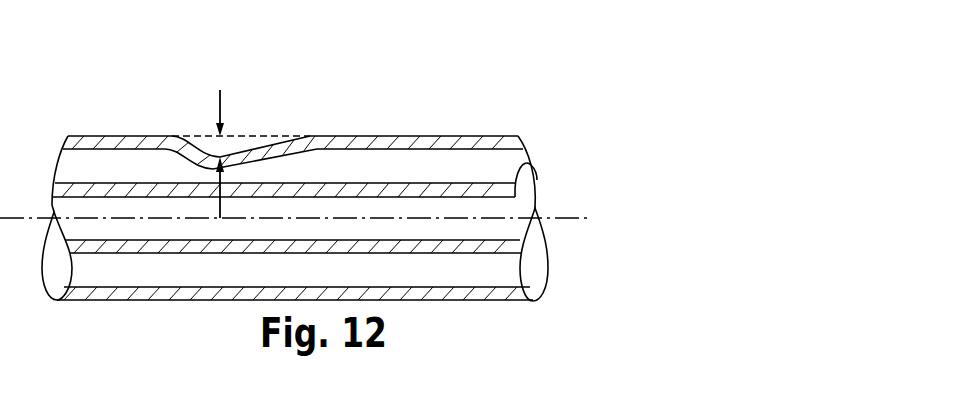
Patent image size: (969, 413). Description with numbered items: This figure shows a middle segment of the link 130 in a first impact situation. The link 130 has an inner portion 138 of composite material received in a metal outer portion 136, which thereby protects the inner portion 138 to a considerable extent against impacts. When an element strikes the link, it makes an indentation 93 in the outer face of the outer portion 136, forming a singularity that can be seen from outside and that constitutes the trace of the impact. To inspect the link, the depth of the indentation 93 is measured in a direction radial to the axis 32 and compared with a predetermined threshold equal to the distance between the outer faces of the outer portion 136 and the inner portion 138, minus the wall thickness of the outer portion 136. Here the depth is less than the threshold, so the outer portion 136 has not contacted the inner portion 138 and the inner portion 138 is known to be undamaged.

The link 130 is at (308, 182).
The outer portion 136 is at (403, 143).
The inner portion 138 is at (537, 165).
The indentation 93 is at (243, 138).
The axis 32 is at (578, 218).